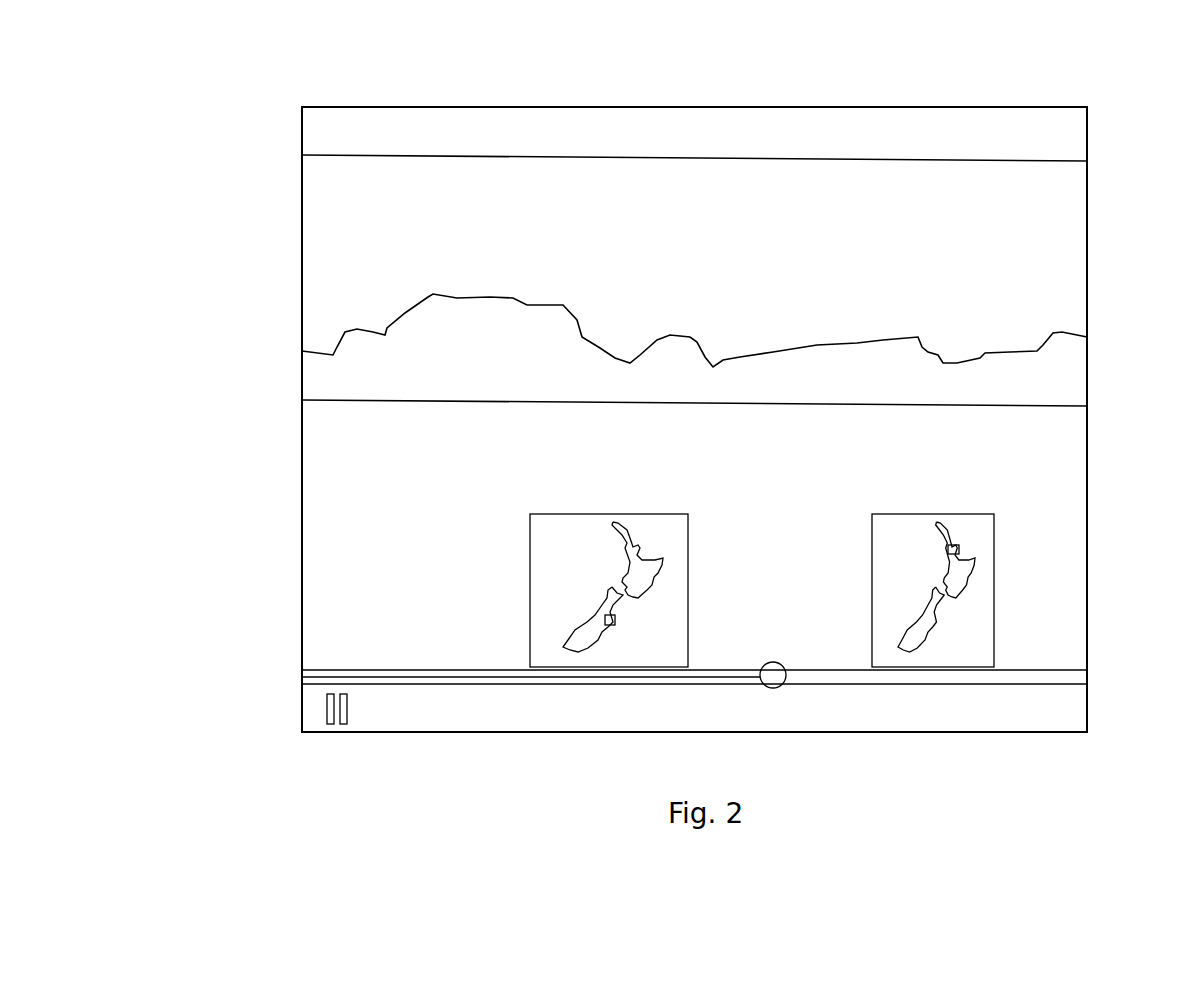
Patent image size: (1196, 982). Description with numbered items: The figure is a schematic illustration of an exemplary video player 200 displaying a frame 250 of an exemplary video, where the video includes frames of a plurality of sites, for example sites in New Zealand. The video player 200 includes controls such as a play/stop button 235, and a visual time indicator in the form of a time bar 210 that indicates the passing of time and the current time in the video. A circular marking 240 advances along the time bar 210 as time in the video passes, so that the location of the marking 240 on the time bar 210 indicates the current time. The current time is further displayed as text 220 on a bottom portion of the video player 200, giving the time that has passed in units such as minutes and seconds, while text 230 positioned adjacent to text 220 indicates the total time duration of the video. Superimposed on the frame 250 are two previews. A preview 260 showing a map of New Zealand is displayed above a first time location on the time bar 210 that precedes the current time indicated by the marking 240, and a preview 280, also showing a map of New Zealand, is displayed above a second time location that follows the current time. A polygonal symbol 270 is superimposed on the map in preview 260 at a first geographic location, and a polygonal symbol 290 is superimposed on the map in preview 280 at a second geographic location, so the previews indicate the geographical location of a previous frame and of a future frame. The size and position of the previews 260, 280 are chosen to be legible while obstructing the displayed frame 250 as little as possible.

The video player 200 is at (268, 86).
The time bar 210 is at (302, 681).
The text 220 is at (437, 718).
The text 230 is at (478, 718).
The play/stop button 235 is at (334, 725).
The circular marking 240 is at (773, 688).
The frame 250 is at (302, 432).
The preview 260 is at (530, 623).
The polygonal symbol 270 is at (615, 625).
The preview 280 is at (872, 623).
The polygonal symbol 290 is at (959, 548).